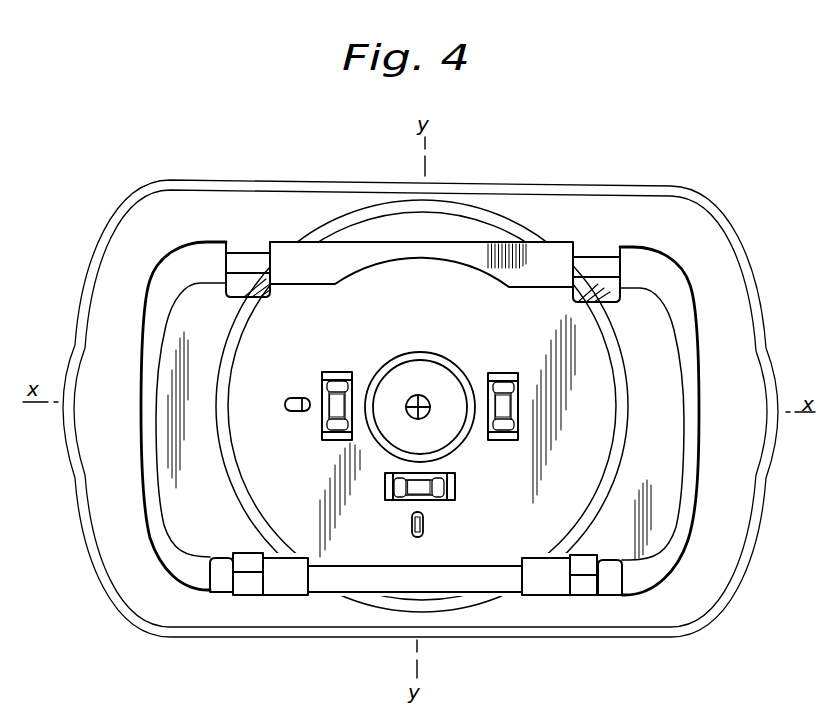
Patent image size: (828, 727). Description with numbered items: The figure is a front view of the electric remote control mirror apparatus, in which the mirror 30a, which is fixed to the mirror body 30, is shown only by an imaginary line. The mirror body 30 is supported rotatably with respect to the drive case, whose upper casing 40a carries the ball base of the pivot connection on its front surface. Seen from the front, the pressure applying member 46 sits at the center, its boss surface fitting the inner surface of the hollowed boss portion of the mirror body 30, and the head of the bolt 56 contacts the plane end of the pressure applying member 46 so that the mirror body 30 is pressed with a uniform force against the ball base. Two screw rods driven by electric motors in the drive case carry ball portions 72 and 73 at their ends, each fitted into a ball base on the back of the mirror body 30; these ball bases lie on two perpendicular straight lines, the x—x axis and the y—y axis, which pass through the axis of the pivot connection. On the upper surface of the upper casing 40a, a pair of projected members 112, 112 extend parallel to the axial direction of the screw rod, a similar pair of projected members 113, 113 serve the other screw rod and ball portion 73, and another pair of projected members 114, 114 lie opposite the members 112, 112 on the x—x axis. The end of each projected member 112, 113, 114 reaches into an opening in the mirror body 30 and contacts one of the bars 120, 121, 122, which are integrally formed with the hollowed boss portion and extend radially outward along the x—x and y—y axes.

The mirror body 30 is at (162, 292).
The mirror 30a is at (688, 190).
The upper casing 40a is at (443, 227).
The pressure applying member 46 is at (417, 362).
The bolt 56 is at (435, 396).
The ball portion 72 is at (293, 412).
The ball portion 73 is at (423, 525).
The projected members 112 is at (337, 372).
The projected members 113 is at (393, 497).
The projected members 114 is at (503, 373).
The bar 120 is at (330, 402).
The bar 121 is at (412, 497).
The bar 122 is at (510, 405).